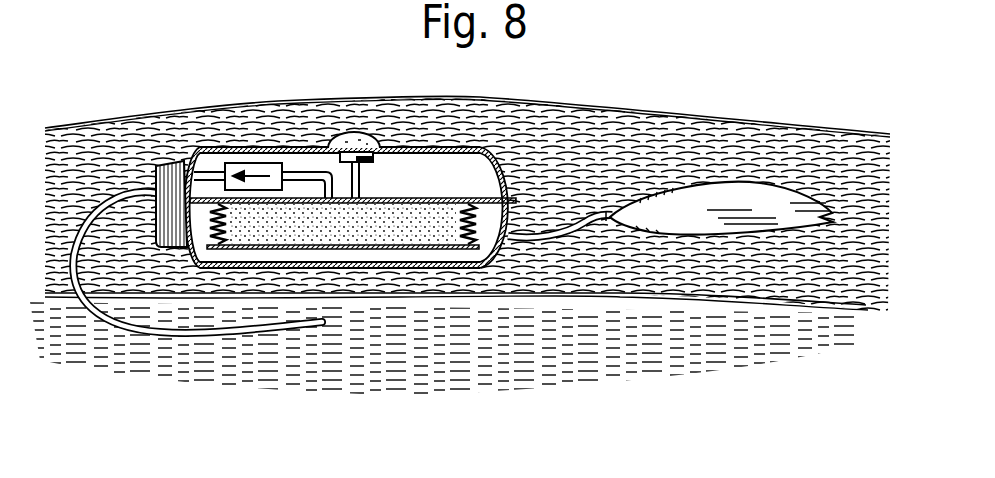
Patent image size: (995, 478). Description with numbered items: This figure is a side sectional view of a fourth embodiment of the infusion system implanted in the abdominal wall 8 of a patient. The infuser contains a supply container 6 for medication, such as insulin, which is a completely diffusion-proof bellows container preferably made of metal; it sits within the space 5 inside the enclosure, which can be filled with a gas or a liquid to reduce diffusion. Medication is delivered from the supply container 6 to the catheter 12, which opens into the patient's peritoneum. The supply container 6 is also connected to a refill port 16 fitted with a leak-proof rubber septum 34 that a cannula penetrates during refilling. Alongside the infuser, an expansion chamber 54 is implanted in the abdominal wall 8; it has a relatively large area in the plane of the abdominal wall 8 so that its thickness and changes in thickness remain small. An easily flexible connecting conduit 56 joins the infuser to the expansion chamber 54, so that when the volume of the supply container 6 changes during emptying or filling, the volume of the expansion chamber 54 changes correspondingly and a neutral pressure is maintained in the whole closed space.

The space 5 is at (407, 253).
The supply container 6 is at (410, 223).
The abdominal wall 8 is at (822, 145).
The catheter 12 is at (168, 337).
The refill port 16 is at (381, 150).
The septum 34 is at (338, 138).
The expansion chamber 54 is at (708, 195).
The connecting conduit 56 is at (563, 230).